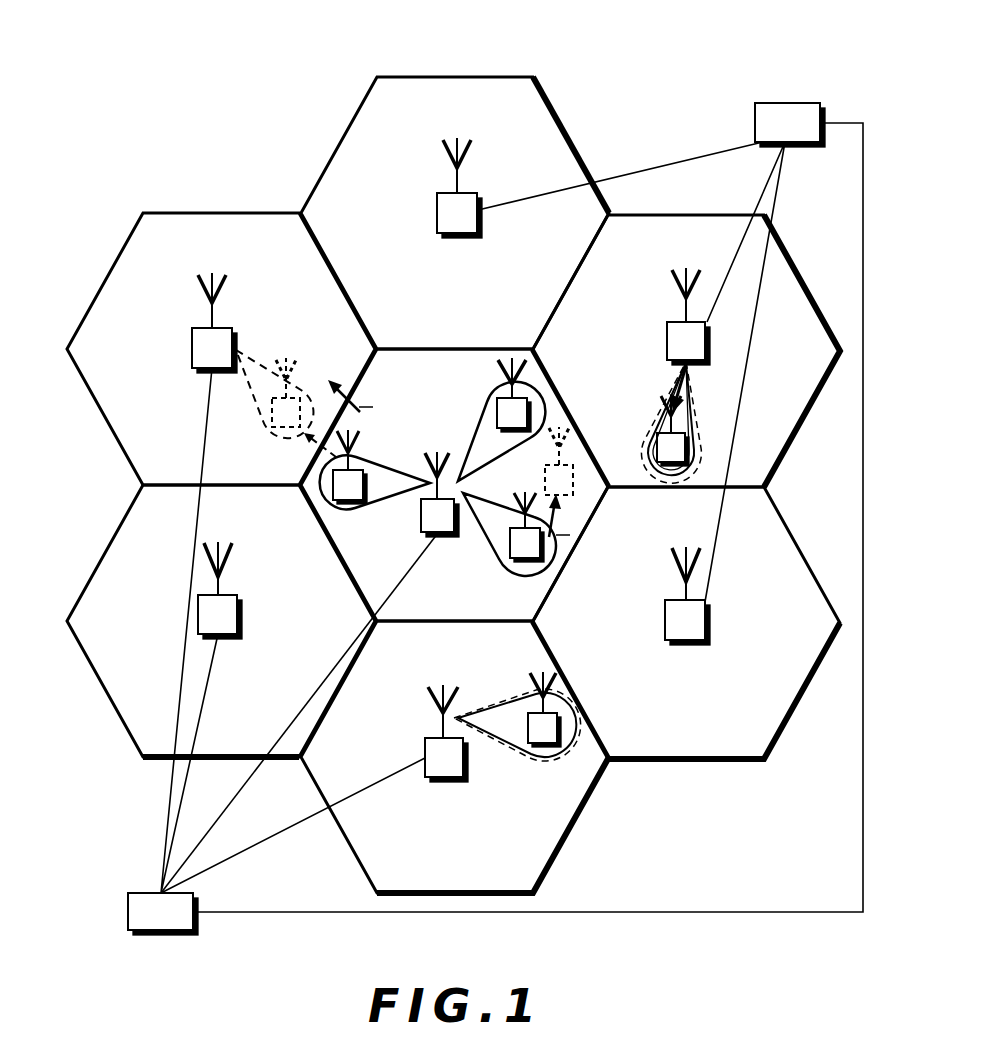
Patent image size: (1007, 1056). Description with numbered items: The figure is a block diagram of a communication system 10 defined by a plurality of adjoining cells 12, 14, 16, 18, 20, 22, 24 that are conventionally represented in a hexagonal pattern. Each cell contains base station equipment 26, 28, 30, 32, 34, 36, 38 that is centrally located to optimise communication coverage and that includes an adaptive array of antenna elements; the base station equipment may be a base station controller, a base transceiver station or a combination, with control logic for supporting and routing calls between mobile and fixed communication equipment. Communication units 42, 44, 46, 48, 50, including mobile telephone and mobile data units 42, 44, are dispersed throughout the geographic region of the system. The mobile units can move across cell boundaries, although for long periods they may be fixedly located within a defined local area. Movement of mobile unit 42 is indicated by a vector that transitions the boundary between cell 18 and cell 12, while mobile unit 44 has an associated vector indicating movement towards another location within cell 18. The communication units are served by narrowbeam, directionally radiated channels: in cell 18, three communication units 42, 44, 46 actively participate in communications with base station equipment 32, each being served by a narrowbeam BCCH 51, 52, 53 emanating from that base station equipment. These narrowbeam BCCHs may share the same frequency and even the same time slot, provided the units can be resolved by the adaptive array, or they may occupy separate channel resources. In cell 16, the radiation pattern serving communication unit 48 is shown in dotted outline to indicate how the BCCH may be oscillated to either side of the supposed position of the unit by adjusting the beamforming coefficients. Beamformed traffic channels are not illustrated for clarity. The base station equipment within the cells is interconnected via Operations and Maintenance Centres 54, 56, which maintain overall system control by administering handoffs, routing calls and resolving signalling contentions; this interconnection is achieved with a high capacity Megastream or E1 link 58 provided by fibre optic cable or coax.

The communication system 10 is at (224, 73).
The cell 12 is at (212, 211).
The cell 14 is at (447, 77).
The cell 16 is at (672, 215).
The cell 18 is at (418, 375).
The cell 20 is at (127, 510).
The cell 22 is at (576, 822).
The cell 24 is at (702, 760).
The base station equipment 26 is at (193, 330).
The base station equipment 28 is at (440, 194).
The base station equipment 30 is at (668, 322).
The base station equipment 32 is at (446, 534).
The base station equipment 34 is at (230, 596).
The base station equipment 36 is at (437, 780).
The base station equipment 38 is at (665, 622).
The mobile communication unit 42 is at (272, 412).
The mobile communication unit 44 is at (545, 480).
The communication unit 46 is at (497, 400).
The communication unit 48 is at (658, 435).
The communication unit 50 is at (550, 760).
The narrowbeam BCCH 51 is at (390, 508).
The narrowbeam BCCH 52 is at (475, 430).
The narrowbeam BCCH 53 is at (530, 572).
The Operations and Maintenance Centre 54 is at (172, 930).
The Operations and Maintenance Centre 56 is at (782, 103).
The E1 link 58 is at (236, 792).